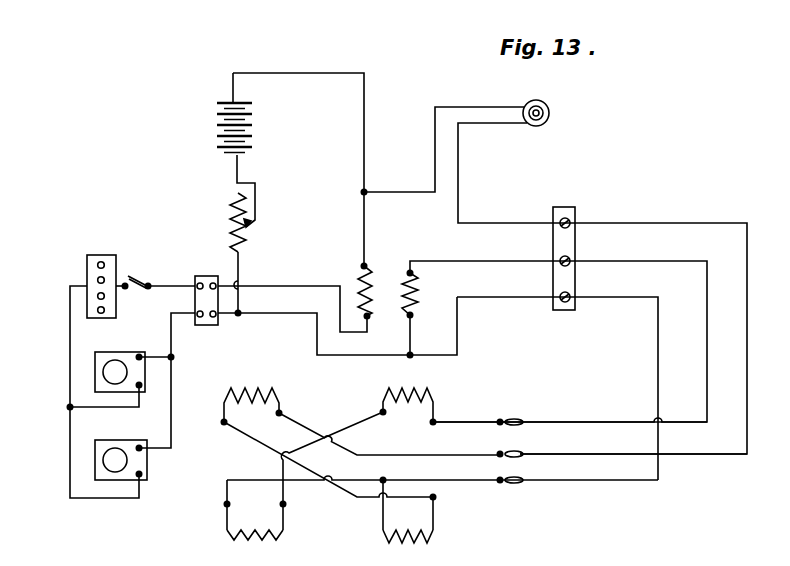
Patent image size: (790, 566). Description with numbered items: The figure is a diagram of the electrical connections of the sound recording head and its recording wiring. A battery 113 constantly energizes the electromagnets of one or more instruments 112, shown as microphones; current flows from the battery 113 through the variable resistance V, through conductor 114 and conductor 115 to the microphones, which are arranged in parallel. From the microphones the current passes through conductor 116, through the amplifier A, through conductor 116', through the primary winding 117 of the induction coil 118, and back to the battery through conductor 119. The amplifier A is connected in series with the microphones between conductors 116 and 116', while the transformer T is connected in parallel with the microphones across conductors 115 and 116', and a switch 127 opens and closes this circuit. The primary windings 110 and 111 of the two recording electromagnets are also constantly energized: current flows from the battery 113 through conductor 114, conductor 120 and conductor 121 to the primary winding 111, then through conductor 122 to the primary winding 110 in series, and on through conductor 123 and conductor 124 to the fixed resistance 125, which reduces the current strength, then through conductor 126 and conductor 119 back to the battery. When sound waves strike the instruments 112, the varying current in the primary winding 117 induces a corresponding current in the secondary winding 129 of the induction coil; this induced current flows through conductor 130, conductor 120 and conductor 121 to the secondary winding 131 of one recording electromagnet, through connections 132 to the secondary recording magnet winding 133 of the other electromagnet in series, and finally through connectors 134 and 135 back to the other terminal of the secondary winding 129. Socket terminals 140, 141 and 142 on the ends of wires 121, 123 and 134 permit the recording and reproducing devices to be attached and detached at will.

The primary winding 110 is at (262, 388).
The primary winding 111 is at (433, 540).
The instruments 112 is at (112, 374).
The battery 113 is at (217, 127).
The conductor 114 is at (240, 270).
The conductor 115 is at (172, 353).
The conductor 116 is at (83, 392).
The conductor 116' is at (292, 292).
The primary winding 117 is at (356, 278).
The induction coil 118 is at (390, 320).
The conductor 119 is at (364, 103).
The conductor 120 is at (497, 297).
The conductor 121 is at (462, 482).
The conductor 122 is at (267, 449).
The conductor 123 is at (376, 454).
The conductor 124 is at (632, 218).
The fixed resistance 125 is at (549, 112).
The conductor 126 is at (407, 190).
The switch 127 is at (163, 252).
The secondary winding 129 is at (415, 298).
The conductor 130 is at (413, 343).
The secondary winding 131 is at (255, 540).
The connections 132 is at (352, 428).
The secondary recording magnet winding 133 is at (417, 386).
The connector 134 is at (465, 422).
The connector 135 is at (478, 261).
The socket terminal 140 is at (500, 483).
The socket terminal 141 is at (500, 456).
The socket terminal 142 is at (500, 425).
The amplifier A is at (106, 273).
The transformer T is at (208, 278).
The variable resistance V is at (234, 218).